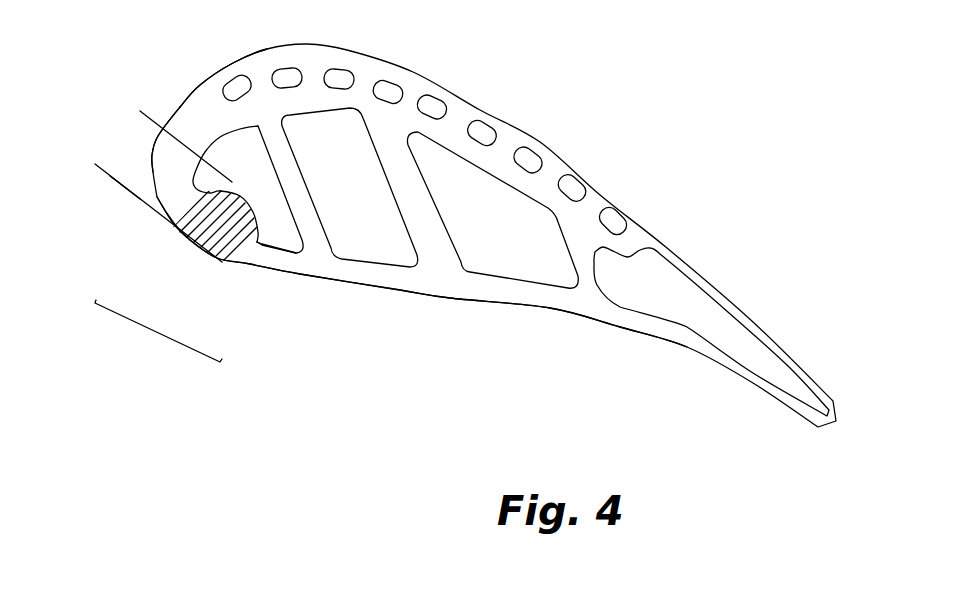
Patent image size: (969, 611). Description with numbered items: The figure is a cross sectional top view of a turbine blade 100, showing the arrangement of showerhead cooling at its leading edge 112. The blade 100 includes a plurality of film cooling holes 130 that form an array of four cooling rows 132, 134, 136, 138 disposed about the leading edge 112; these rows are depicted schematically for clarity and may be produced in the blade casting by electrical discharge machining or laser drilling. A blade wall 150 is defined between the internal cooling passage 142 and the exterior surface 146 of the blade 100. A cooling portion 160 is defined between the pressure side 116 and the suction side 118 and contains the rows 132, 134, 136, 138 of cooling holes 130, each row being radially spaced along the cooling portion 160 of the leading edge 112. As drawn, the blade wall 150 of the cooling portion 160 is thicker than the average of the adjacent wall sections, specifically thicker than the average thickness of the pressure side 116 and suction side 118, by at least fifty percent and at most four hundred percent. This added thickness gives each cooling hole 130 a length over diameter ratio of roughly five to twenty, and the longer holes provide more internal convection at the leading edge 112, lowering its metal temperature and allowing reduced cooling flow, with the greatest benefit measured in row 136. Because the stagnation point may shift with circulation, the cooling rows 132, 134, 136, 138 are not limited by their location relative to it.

The turbine blade 100 is at (585, 100).
The leading edge 112 is at (184, 248).
The pressure side 116 is at (150, 205).
The suction side 118 is at (288, 277).
The film cooling holes 130 is at (161, 352).
The cooling row 132 is at (176, 238).
The cooling row 134 is at (193, 244).
The cooling row 136 is at (205, 248).
The cooling row 138 is at (222, 262).
The cooling passage 142 is at (217, 152).
The exterior surface 146 is at (190, 88).
The blade wall 150 is at (142, 113).
The cooling portion 160 is at (100, 243).